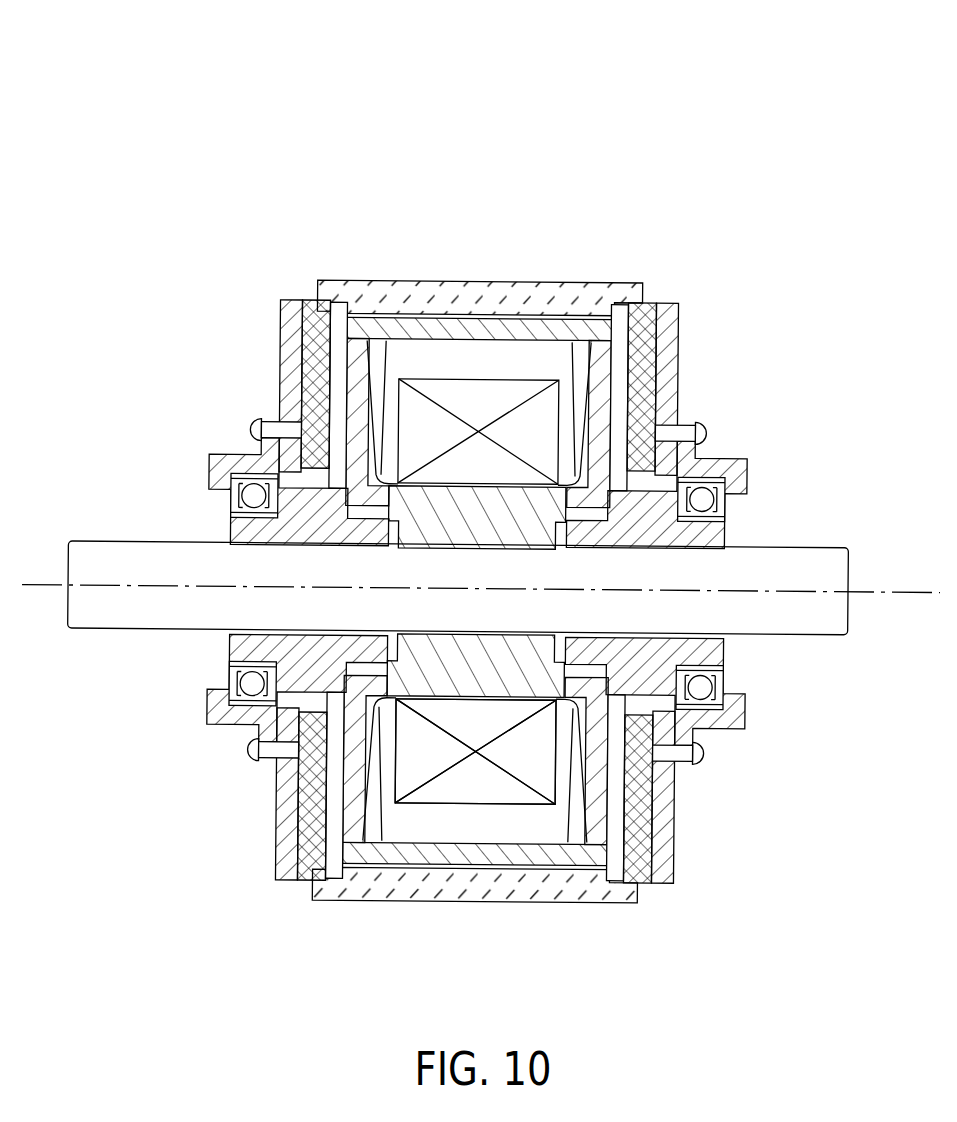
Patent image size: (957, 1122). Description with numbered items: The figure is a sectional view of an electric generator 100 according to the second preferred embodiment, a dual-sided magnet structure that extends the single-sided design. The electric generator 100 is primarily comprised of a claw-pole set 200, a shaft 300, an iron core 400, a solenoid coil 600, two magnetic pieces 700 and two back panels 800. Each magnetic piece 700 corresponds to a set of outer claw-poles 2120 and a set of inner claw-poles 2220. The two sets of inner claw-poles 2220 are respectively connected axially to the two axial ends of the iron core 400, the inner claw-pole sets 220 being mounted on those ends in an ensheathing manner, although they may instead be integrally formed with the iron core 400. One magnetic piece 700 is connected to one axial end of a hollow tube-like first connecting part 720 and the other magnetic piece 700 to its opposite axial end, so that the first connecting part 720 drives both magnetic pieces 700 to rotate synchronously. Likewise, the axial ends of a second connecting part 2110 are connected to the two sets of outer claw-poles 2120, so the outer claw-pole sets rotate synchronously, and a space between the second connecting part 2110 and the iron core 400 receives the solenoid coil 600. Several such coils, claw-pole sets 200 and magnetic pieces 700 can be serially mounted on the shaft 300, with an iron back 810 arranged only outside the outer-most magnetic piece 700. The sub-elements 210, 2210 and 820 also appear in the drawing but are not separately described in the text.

The electric generator 100 is at (478, 40).
The claw-pole set 200 is at (645, 155).
The stator core 210 is at (348, 213).
The second connecting part 2110 is at (410, 320).
The outer claw-poles 2120 is at (373, 347).
The inner claw-pole set 220 is at (531, 209).
The coil winding 2210 is at (483, 432).
The inner claw-poles 2220 is at (373, 440).
The shaft 300 is at (100, 543).
The iron core 400 is at (500, 675).
The solenoid coil 600 is at (468, 785).
The magnetic piece 700 is at (311, 298).
The first connecting part 720 is at (598, 286).
The back panel 800 is at (192, 389).
The iron back 810 is at (280, 352).
The bearing seat 820 is at (232, 535).